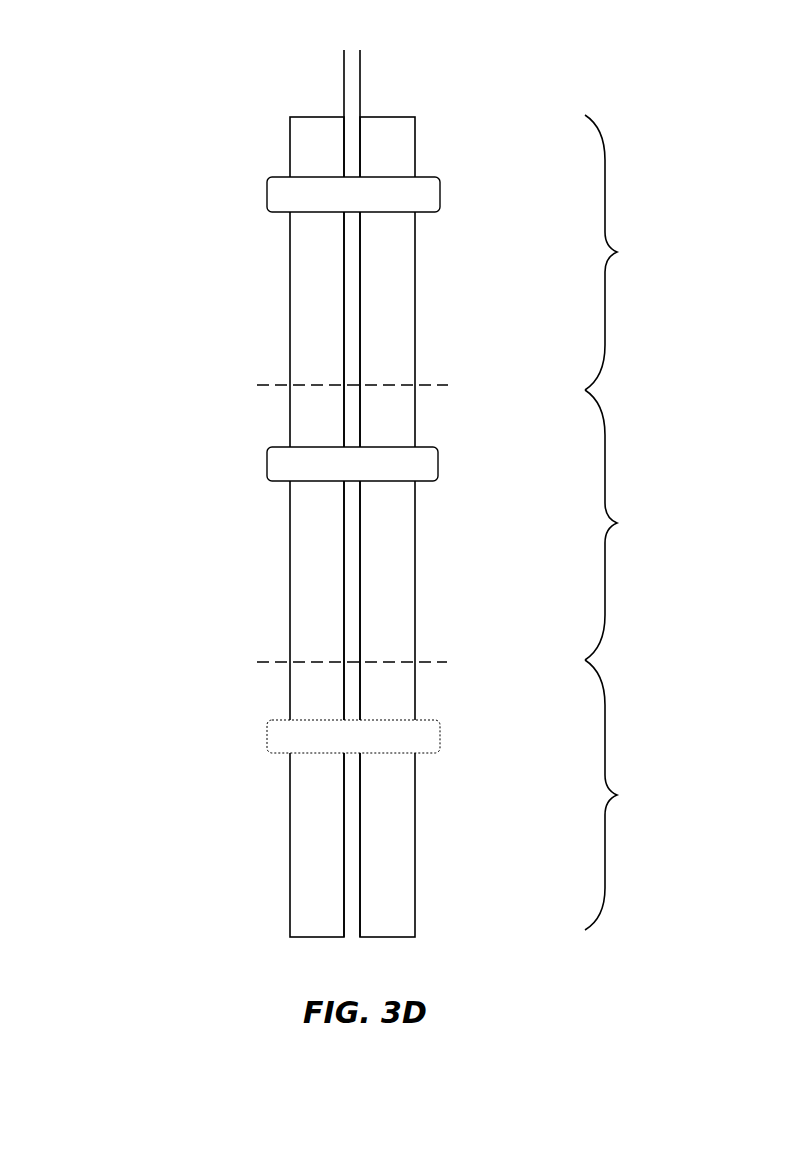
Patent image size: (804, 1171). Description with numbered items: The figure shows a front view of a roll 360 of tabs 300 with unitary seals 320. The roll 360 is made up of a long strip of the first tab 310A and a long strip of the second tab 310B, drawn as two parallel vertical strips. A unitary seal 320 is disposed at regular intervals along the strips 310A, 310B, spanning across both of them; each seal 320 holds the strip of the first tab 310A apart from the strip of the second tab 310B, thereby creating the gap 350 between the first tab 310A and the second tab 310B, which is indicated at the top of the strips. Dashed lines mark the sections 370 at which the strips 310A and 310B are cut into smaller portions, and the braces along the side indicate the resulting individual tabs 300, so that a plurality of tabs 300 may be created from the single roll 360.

The roll 360 is at (89, 51).
The gap 350 is at (303, 62).
The first tab 310A is at (290, 277).
The second tab 310B is at (415, 252).
The unitary seal 320 is at (440, 458).
The sections 370 is at (257, 662).
The tab 300 is at (627, 522).